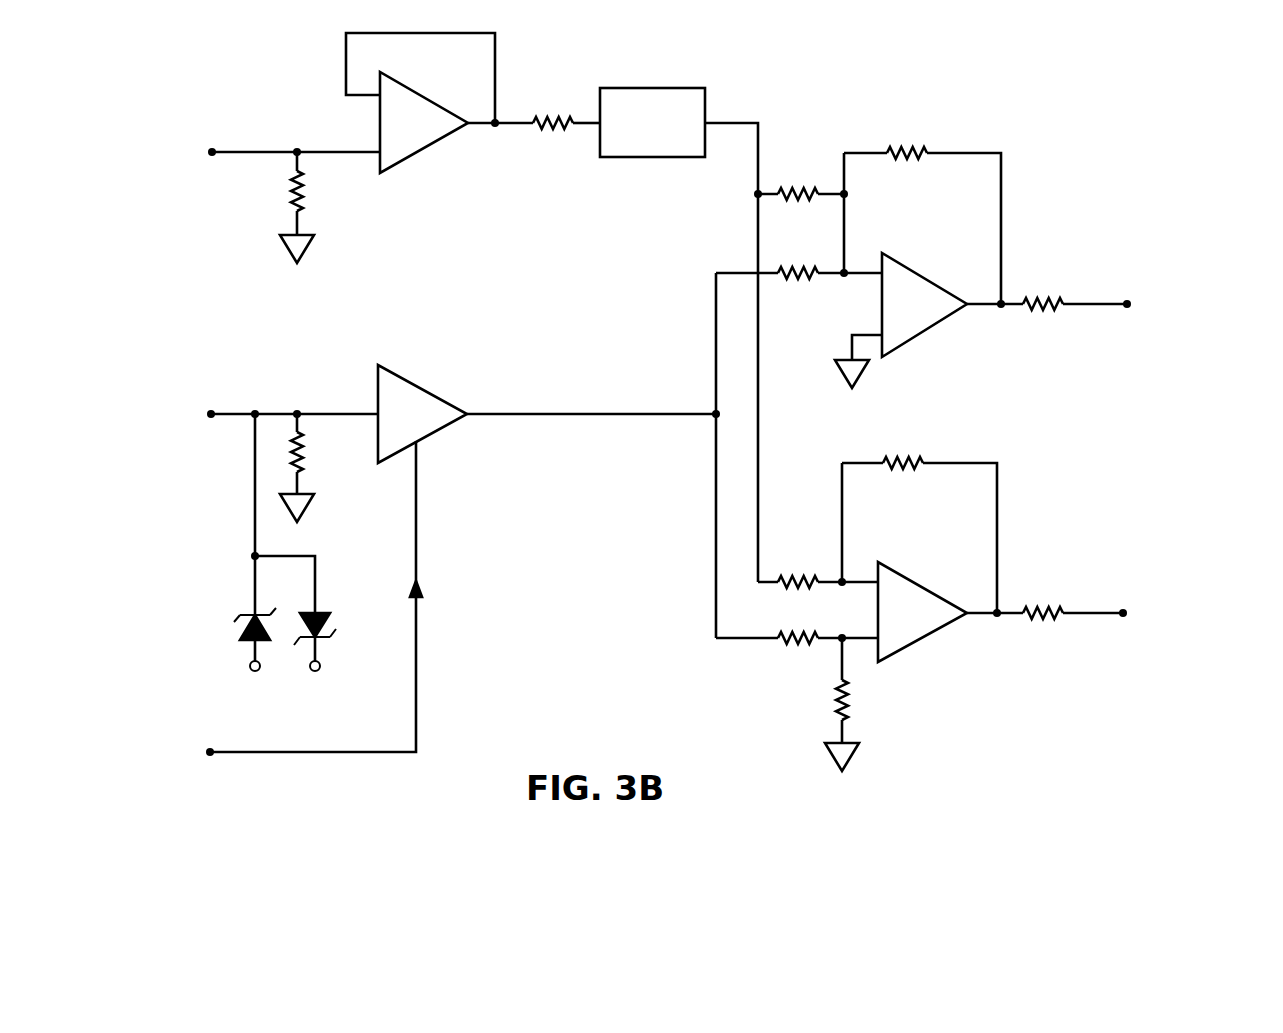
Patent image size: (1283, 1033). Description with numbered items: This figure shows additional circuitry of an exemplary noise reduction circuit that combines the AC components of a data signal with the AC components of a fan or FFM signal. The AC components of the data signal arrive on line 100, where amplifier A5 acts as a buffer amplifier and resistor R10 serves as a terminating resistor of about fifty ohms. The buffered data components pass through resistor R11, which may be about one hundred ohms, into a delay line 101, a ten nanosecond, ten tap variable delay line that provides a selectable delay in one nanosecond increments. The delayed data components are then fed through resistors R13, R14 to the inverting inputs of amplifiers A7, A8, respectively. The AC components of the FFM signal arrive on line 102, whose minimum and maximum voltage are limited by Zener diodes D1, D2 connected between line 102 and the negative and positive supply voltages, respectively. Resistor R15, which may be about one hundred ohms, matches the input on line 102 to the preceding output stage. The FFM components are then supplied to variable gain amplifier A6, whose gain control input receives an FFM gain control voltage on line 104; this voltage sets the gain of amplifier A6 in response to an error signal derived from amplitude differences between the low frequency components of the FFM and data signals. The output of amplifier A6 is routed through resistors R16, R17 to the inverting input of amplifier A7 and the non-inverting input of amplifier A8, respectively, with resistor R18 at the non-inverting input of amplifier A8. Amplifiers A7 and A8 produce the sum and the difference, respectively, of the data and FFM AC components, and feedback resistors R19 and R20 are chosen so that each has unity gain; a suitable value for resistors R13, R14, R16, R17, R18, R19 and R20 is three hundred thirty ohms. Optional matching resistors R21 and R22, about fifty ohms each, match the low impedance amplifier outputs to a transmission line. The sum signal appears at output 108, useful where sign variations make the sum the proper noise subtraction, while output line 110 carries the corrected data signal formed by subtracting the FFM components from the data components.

The line 100 is at (270, 150).
The delay line 101 is at (648, 88).
The line 102 is at (237, 411).
The line 104 is at (323, 753).
The output 108 is at (1097, 305).
The output line 110 is at (1097, 614).
The resistor R10 is at (277, 207).
The resistor R11 is at (565, 109).
The resistor R13 is at (801, 213).
The resistor R14 is at (818, 525).
The resistor R15 is at (316, 468).
The resistor R16 is at (799, 259).
The resistor R17 is at (797, 657).
The resistor R18 is at (863, 704).
The resistor R19 is at (922, 213).
The resistor R20 is at (919, 523).
The resistor R21 is at (1041, 290).
The resistor R22 is at (1039, 598).
The amplifier A5 is at (439, 103).
The variable gain amplifier A6 is at (549, 455).
The amplifier A7 is at (929, 320).
The amplifier A8 is at (950, 612).
The Zener diode D1 is at (258, 557).
The Zener diode D2 is at (331, 656).